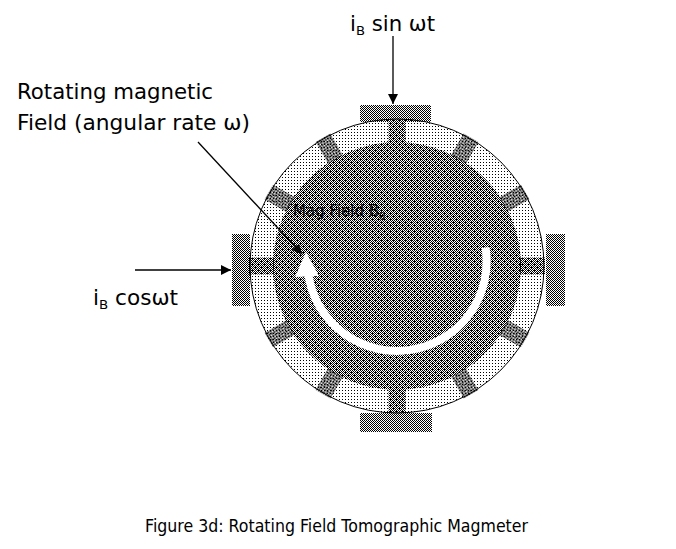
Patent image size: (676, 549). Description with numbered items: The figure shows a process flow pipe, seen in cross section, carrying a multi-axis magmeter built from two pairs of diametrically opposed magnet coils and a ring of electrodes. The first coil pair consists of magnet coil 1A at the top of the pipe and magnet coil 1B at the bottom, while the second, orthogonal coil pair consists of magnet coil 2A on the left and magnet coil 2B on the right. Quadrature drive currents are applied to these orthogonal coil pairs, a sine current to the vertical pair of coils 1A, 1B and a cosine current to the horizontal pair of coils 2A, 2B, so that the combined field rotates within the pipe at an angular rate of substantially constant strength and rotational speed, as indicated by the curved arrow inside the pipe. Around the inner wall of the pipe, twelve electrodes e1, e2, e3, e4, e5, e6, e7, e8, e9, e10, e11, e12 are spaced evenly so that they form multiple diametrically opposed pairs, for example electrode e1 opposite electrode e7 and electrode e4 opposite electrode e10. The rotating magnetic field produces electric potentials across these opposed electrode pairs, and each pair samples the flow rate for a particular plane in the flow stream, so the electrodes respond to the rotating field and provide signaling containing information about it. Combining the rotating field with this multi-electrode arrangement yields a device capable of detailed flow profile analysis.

The electrode e1 is at (386, 133).
The electrode e2 is at (321, 141).
The electrode e3 is at (270, 188).
The electrode e4 is at (263, 282).
The electrode e5 is at (276, 355).
The electrode e6 is at (334, 399).
The electrode e7 is at (408, 401).
The electrode e8 is at (475, 390).
The electrode e9 is at (530, 335).
The electrode e10 is at (530, 280).
The electrode e11 is at (525, 187).
The electrode e12 is at (469, 136).
The magnet coil 1A is at (412, 106).
The magnet coil 1B is at (450, 457).
The magnet coil 2A is at (183, 270).
The magnet coil 2B is at (606, 270).